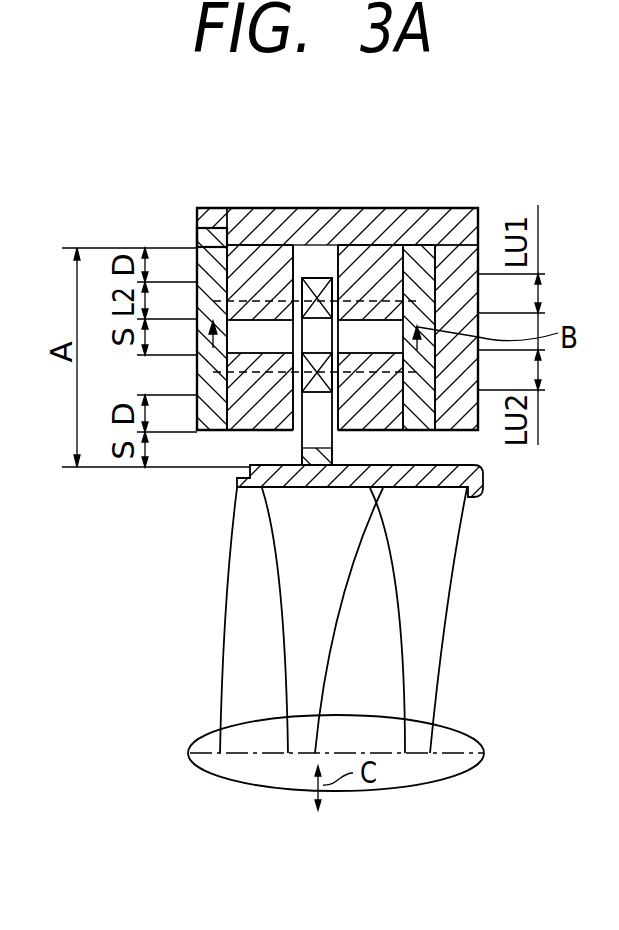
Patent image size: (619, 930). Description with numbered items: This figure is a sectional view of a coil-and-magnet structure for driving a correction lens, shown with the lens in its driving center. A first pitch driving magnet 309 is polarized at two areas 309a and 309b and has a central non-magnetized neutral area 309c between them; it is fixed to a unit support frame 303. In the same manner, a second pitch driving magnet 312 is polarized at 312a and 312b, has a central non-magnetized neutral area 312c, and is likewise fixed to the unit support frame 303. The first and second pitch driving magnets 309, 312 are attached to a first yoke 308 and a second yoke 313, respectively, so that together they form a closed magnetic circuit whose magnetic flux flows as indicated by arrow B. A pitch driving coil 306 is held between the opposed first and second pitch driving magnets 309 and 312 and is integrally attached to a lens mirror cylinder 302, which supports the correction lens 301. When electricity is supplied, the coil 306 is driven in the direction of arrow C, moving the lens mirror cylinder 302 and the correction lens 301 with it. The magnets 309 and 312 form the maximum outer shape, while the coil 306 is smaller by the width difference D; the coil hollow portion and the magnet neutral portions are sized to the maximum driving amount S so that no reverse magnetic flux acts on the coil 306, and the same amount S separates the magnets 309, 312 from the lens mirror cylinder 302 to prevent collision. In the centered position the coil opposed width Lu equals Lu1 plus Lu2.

The correction lens 301 is at (483, 752).
The lens mirror cylinder 302 is at (485, 492).
The unit support frame 303 is at (212, 210).
The pitch driving coil 306 is at (330, 245).
The first yoke 308 is at (455, 207).
The first pitch driving magnet 309 is at (352, 245).
The polarized area of first pitch driving magnet 309a is at (425, 205).
The polarized area of first pitch driving magnet 309b is at (360, 432).
The central non-magnetized neutral area 309c is at (376, 335).
The second pitch driving magnet 312 is at (243, 212).
The polarized area of second pitch driving magnet 312a is at (263, 245).
The polarized area of second pitch driving magnet 312b is at (250, 432).
The central non-magnetized neutral area 312c is at (276, 333).
The second yoke 313 is at (197, 237).